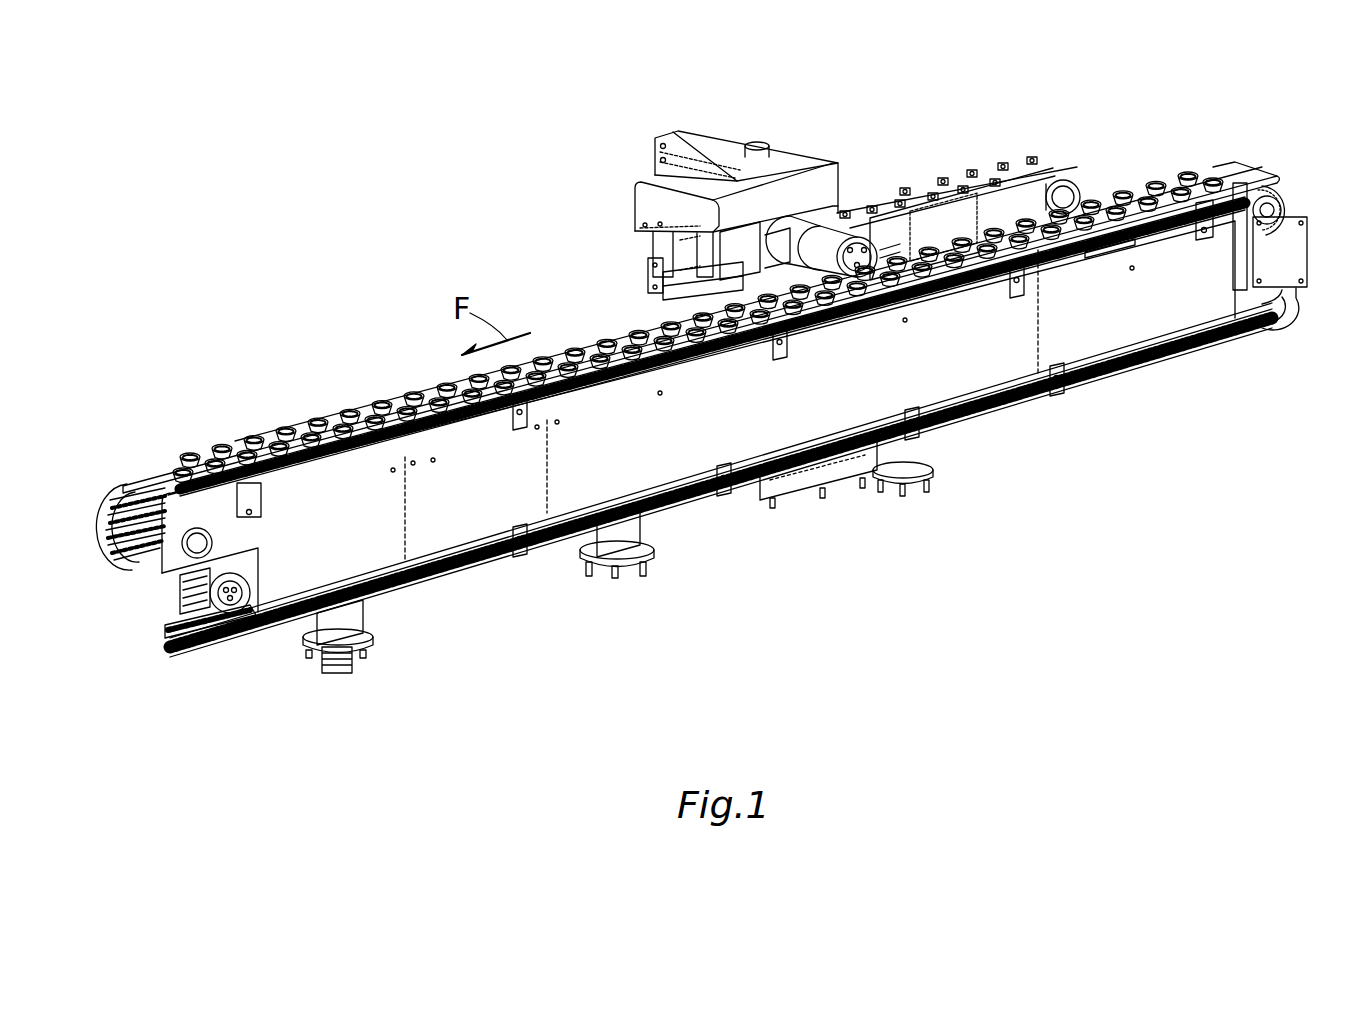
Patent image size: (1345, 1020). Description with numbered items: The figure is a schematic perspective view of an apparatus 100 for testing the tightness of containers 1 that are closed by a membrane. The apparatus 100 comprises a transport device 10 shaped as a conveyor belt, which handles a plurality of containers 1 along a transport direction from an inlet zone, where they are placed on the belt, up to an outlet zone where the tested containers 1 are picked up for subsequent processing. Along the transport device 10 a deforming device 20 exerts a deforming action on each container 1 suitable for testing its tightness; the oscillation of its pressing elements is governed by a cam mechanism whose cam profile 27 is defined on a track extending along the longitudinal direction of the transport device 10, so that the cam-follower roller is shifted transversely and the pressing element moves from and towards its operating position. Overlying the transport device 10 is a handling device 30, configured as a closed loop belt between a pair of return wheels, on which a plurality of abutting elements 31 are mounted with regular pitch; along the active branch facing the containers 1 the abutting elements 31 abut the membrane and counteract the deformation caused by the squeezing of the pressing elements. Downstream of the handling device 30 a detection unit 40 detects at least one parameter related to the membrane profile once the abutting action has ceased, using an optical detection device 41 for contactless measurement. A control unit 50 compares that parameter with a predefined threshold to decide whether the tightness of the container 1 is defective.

The apparatus 100 is at (514, 114).
The container 1 is at (357, 420).
The transport device 10 is at (500, 569).
The deforming device 20 is at (375, 456).
The cam profile 27 is at (1112, 250).
The handling device 30 is at (1042, 154).
The abutting element 31 is at (972, 170).
The detection unit 40 is at (650, 275).
The optical detection device 41 is at (720, 245).
The control unit 50 is at (812, 148).